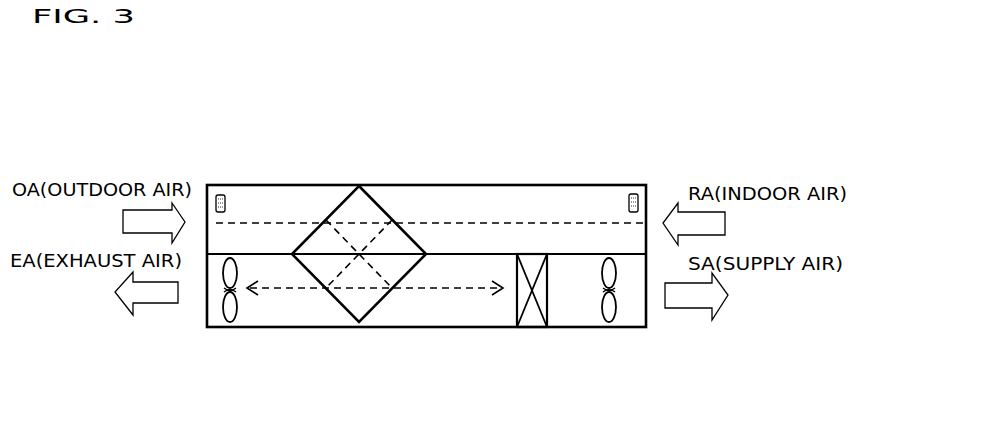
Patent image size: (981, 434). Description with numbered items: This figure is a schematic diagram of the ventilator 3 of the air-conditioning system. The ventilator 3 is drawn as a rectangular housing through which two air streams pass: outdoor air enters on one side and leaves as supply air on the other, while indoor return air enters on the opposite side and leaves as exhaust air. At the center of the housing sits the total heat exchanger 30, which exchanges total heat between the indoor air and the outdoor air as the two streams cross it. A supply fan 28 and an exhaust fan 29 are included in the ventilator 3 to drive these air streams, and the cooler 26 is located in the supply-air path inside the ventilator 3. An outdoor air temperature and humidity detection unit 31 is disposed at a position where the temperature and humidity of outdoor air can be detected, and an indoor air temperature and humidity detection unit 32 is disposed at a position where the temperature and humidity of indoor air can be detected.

The ventilator 3 is at (543, 185).
The cooler 26 is at (535, 318).
The supply fan 28 is at (613, 310).
The exhaust fan 29 is at (232, 312).
The total heat exchanger 30 is at (350, 215).
The outdoor air temperature and humidity detection unit 31 is at (206, 193).
The indoor air temperature and humidity detection unit 32 is at (648, 197).